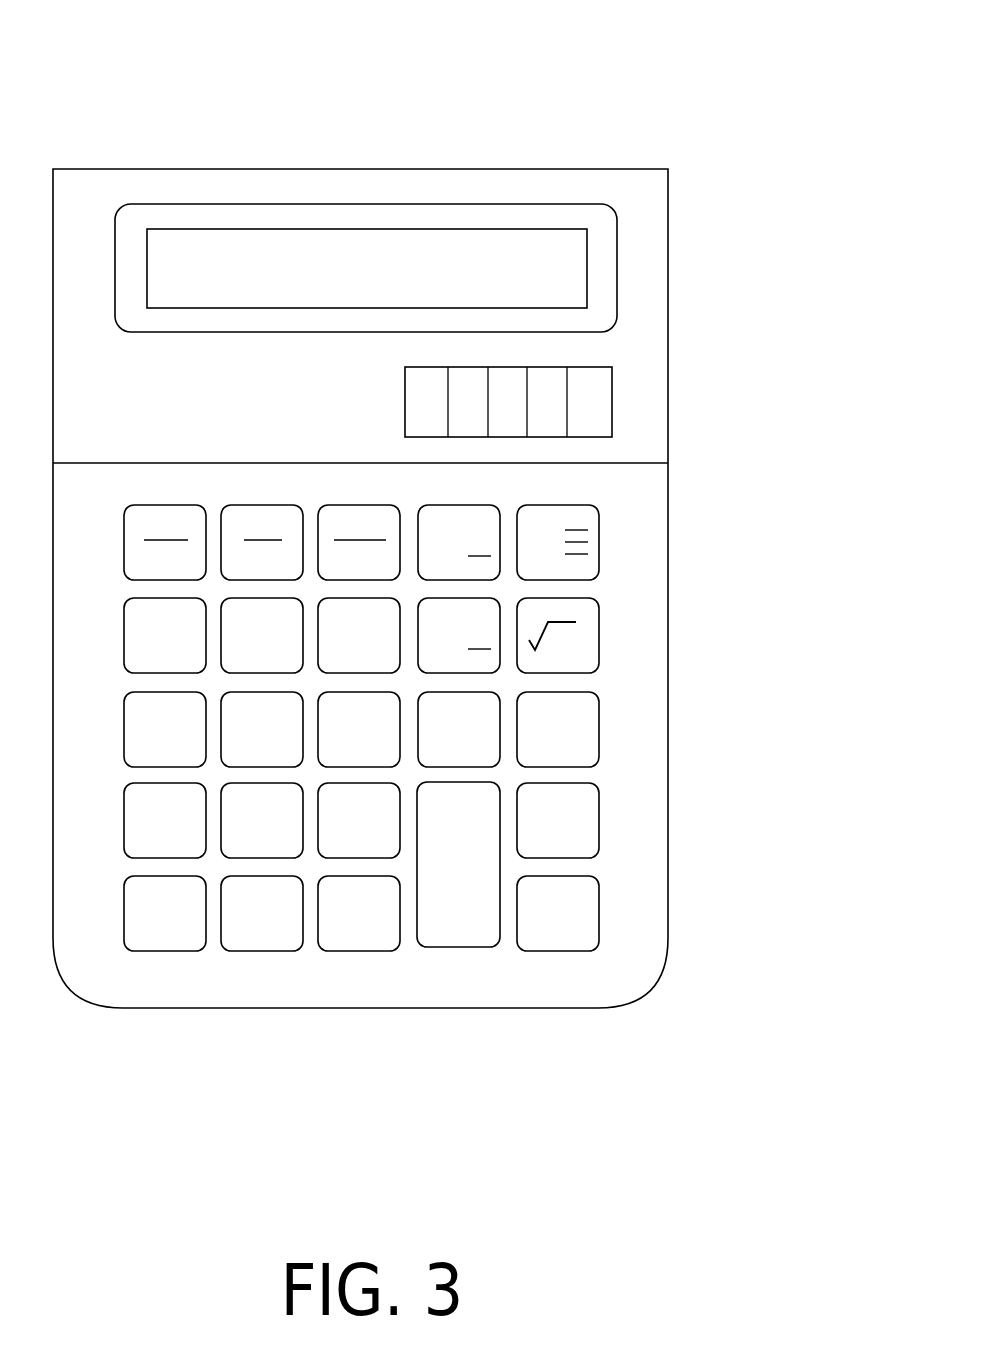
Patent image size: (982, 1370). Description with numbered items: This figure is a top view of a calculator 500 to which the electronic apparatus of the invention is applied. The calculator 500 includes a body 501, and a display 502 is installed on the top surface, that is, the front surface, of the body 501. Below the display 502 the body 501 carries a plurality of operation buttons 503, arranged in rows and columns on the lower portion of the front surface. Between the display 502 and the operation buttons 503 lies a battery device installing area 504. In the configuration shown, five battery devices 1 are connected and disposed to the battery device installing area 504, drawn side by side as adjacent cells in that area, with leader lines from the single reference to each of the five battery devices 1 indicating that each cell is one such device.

The calculator 500 is at (707, 125).
The body 501 is at (640, 422).
The display 502 is at (358, 257).
The operation buttons 503 is at (600, 718).
The battery device installing area 504 is at (618, 371).
The battery device 1 is at (430, 367).